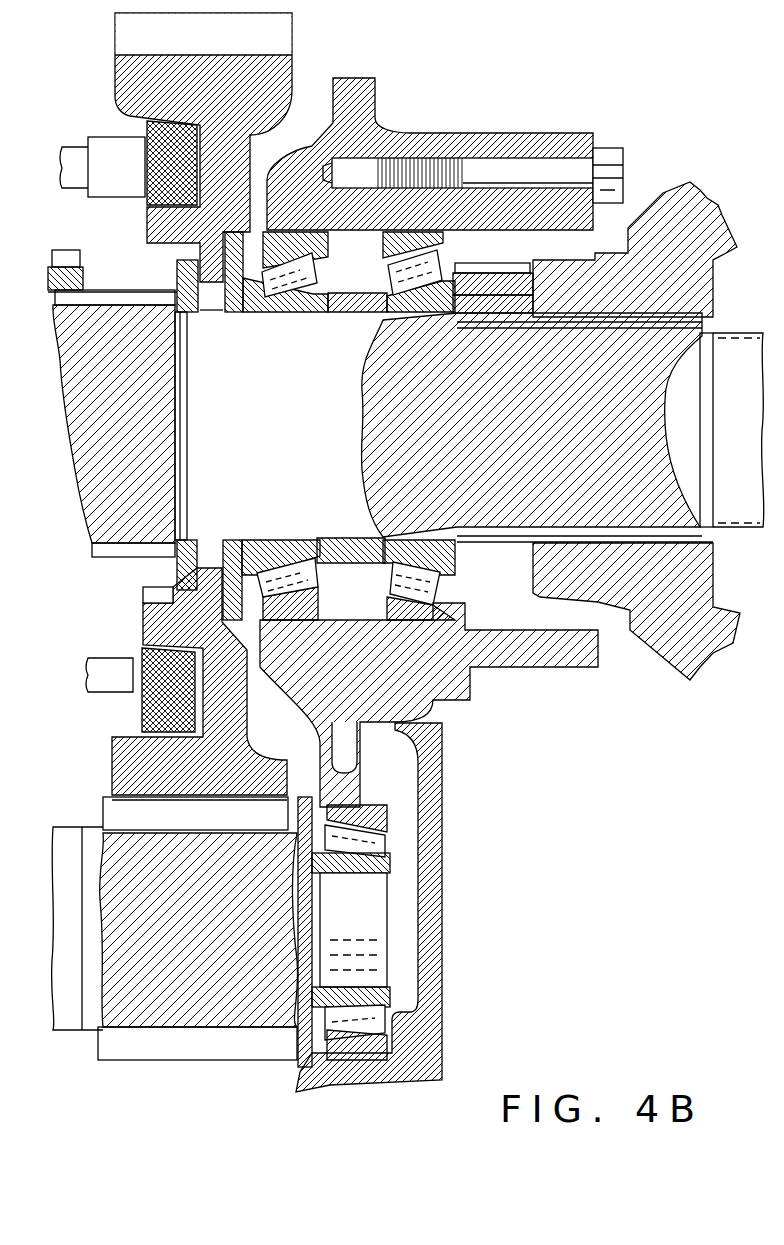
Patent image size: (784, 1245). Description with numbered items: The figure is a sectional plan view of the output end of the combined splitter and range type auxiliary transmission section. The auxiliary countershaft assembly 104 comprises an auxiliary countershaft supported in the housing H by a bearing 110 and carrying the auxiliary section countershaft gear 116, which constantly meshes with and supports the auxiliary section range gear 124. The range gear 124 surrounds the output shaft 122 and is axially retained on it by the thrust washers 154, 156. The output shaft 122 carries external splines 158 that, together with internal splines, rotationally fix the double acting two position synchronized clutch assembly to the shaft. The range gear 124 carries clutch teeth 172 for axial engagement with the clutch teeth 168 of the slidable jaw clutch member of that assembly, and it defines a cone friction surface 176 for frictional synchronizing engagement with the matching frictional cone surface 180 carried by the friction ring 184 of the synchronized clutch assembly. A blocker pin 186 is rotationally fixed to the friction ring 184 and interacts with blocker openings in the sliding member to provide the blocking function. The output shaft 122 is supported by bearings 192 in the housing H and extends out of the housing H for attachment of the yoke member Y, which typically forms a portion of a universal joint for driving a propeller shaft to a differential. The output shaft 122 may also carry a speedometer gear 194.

The auxiliary countershaft assembly 104 is at (63, 1033).
The bearing 110 is at (373, 918).
The auxiliary section countershaft gear 116 is at (107, 817).
The output shaft 122 is at (563, 427).
The auxiliary section range gear 124 is at (130, 758).
The thrust washer 154 is at (172, 310).
The thrust washer 156 is at (236, 312).
The external splines 158 is at (140, 548).
The clutch teeth 168 is at (68, 258).
The clutch teeth 172 is at (157, 587).
The cone friction surface 176 is at (165, 128).
The frictional cone surface 180 is at (183, 127).
The friction ring 184 is at (150, 709).
The blocker pin 186 is at (112, 148).
The bearing 192 is at (382, 284).
The speedometer gear 194 is at (490, 283).
The housing H is at (353, 90).
The yoke member Y is at (705, 220).